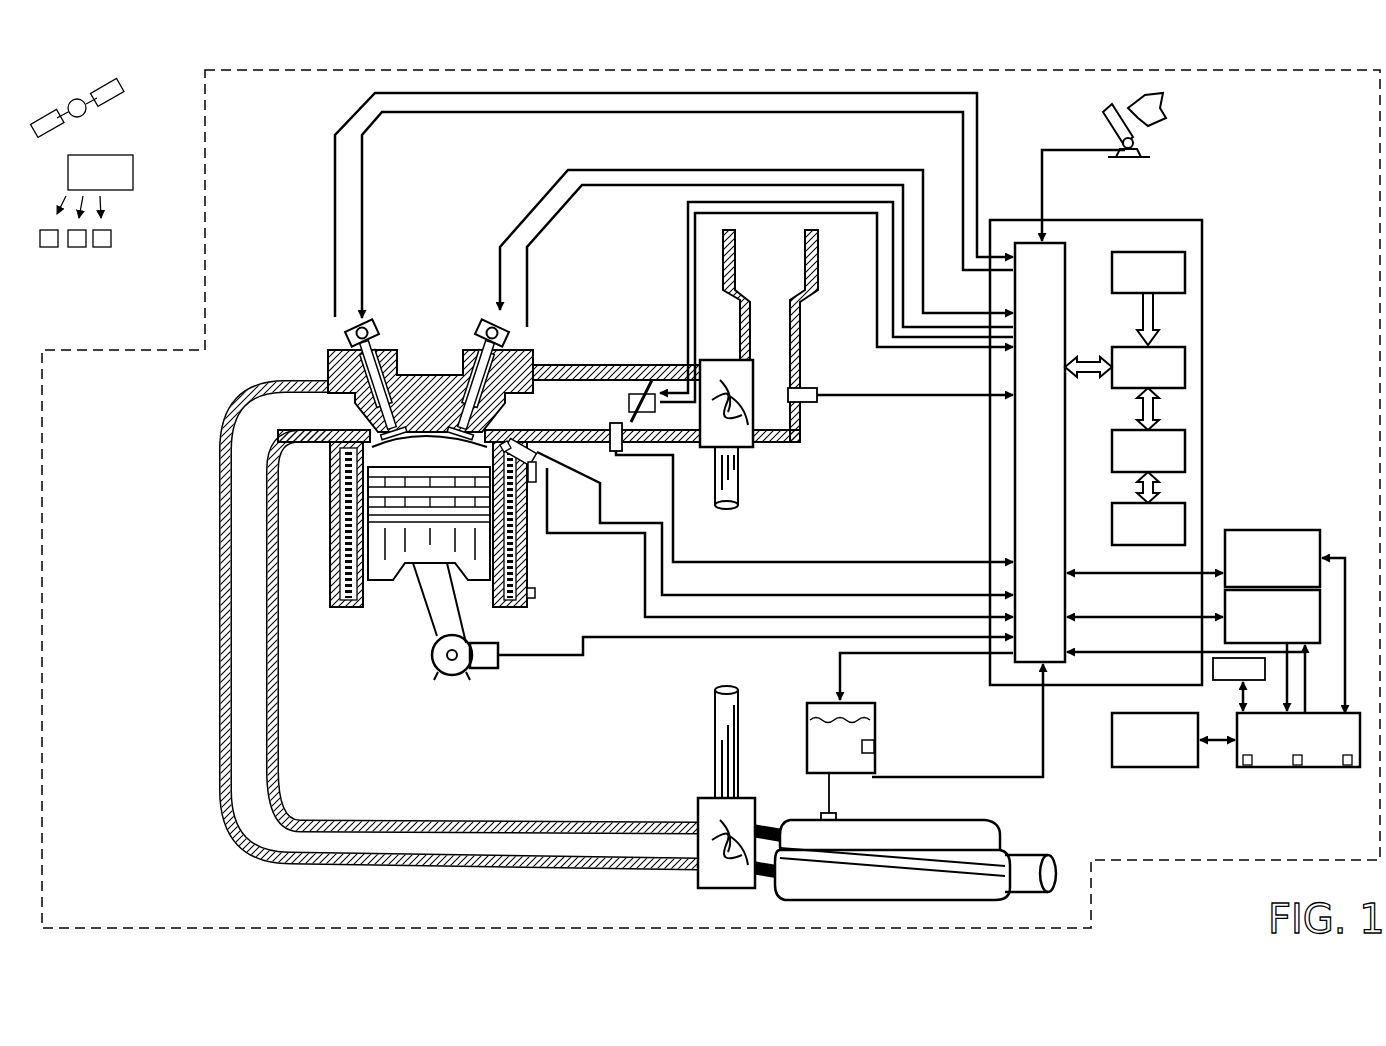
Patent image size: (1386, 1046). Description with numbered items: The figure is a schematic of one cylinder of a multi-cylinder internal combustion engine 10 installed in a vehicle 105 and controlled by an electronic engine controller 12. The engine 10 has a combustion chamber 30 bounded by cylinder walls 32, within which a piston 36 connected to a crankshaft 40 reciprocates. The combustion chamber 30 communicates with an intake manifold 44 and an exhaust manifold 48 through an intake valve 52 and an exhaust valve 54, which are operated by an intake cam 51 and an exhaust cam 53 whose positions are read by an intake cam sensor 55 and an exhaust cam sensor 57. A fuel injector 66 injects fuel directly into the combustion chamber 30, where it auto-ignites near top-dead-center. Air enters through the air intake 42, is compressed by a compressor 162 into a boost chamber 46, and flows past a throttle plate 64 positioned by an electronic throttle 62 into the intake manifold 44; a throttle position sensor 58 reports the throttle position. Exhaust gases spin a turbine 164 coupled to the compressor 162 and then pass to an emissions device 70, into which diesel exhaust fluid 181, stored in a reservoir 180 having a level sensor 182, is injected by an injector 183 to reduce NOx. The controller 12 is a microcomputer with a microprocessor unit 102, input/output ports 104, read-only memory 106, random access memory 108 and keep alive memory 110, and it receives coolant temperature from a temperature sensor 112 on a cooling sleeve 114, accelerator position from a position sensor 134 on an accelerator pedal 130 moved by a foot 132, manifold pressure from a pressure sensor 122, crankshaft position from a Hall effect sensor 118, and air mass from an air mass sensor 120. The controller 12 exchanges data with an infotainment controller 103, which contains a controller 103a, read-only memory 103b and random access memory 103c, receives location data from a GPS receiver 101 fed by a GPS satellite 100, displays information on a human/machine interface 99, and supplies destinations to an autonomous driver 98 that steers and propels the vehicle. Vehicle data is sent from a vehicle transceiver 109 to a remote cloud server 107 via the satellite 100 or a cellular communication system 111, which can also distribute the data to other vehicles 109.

The internal combustion engine 10 is at (303, 250).
The electronic engine controller 12 is at (1203, 223).
The combustion chamber 30 is at (430, 450).
The cylinder walls 32 is at (372, 588).
The piston 36 is at (413, 560).
The crankshaft 40 is at (440, 672).
The air intake 42 is at (780, 278).
The intake manifold 44 is at (570, 416).
The intake boost chamber 46 is at (687, 428).
The exhaust manifold 48 is at (305, 425).
The intake cam 51 is at (480, 325).
The intake valve 52 is at (472, 412).
The exhaust cam 53 is at (372, 325).
The exhaust valve 54 is at (335, 388).
The intake cam sensor 55 is at (505, 348).
The exhaust cam sensor 57 is at (348, 345).
The throttle position sensor 58 is at (664, 392).
The electronic throttle 62 is at (620, 395).
The throttle plate 64 is at (645, 392).
The fuel injector 66 is at (756, 516).
The emissions device 70 is at (800, 888).
The autonomous driver 98 is at (1193, 651).
The human/machine interface 99 is at (1206, 621).
The GPS satellite 100 is at (84, 116).
The GPS receiver 101 is at (1173, 740).
The microprocessor unit 102 is at (1186, 368).
The infotainment controller 103 is at (1298, 724).
The controller 103a is at (1241, 768).
The read-only memory 103b is at (1292, 768).
The random access memory 103c is at (1346, 768).
The input/output ports 104 is at (1066, 253).
The vehicle 105 is at (48, 690).
The read-only memory 106 is at (1186, 272).
The remote cloud server 107 is at (100, 172).
The random access memory 108 is at (1186, 450).
The vehicle transceiver 109 is at (80, 253).
The keep alive memory 110 is at (1186, 522).
The cellular communication system 111 is at (110, 209).
The temperature sensor 112 is at (538, 482).
The cooling sleeve 114 is at (530, 598).
The Hall effect sensor 118 is at (484, 670).
The air mass sensor 120 is at (818, 390).
The pressure sensor 122 is at (612, 425).
The accelerator pedal 130 is at (1108, 120).
The foot 132 is at (1158, 96).
The position sensor 134 is at (1150, 146).
The compressor 162 is at (722, 360).
The turbine 164 is at (705, 797).
The reservoir 180 is at (880, 700).
The diesel exhaust fluid 181 is at (805, 742).
The level sensor 182 is at (874, 752).
The injector 183 is at (836, 810).